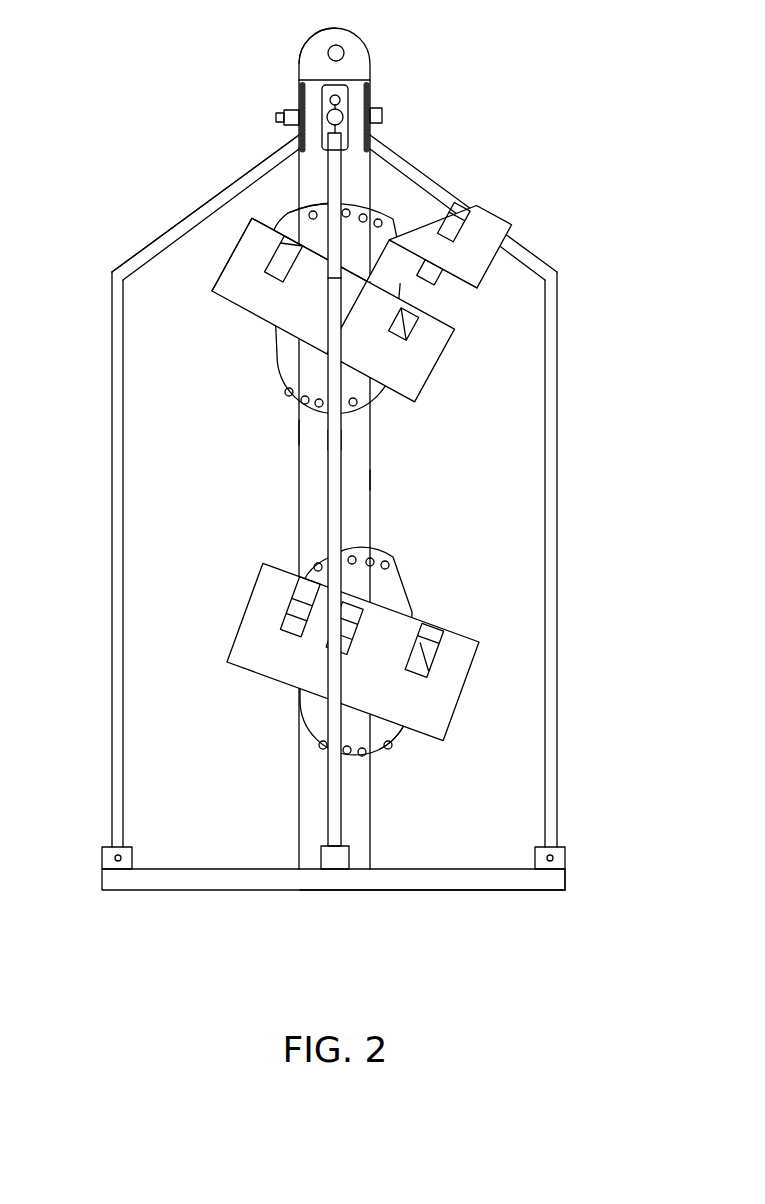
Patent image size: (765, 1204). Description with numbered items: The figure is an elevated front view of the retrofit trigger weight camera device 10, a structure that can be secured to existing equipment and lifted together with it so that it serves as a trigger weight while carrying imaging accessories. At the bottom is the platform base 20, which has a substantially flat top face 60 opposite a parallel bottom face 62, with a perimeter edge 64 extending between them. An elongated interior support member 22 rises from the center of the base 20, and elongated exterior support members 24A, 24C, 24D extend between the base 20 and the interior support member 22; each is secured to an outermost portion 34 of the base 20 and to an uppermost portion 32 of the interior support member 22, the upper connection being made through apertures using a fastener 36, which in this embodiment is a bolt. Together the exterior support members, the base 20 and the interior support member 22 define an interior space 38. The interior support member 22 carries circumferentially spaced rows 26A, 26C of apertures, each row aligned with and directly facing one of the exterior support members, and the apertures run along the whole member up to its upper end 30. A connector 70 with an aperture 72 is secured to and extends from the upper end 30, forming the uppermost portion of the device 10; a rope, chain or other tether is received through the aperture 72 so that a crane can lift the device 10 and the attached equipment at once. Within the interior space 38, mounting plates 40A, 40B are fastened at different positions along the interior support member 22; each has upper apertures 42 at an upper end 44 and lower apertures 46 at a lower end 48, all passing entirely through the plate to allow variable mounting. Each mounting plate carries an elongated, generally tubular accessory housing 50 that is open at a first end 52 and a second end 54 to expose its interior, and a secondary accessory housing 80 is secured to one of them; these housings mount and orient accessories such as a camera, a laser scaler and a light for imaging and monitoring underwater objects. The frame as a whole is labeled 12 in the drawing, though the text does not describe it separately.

The retrofit trigger weight camera device 10 is at (138, 111).
The frame 12 is at (566, 538).
The platform base 20 is at (218, 898).
The interior support member 22 is at (371, 800).
The exterior support member 24A is at (123, 387).
The exterior support member 24C is at (557, 468).
The exterior support member 24D is at (342, 440).
The row of apertures 26A is at (299, 432).
The row of apertures 26C is at (370, 480).
The upper end 30 is at (371, 80).
The uppermost portion 32 is at (371, 97).
The outermost portion 34 is at (140, 866).
The fastener 36 is at (276, 117).
The interior space 38 is at (155, 600).
The mounting plate 40A is at (270, 348).
The mounting plate 40B is at (395, 578).
The upper apertures 42 is at (367, 217).
The upper end 44 is at (298, 213).
The lower apertures 46 is at (300, 402).
The lower end 48 is at (402, 748).
The accessory housing 50 is at (441, 379).
The first end 52 is at (214, 262).
The second end 54 is at (450, 344).
The top face 60 is at (470, 869).
The bottom face 62 is at (465, 891).
The perimeter edge 64 is at (566, 881).
The connector 70 is at (298, 42).
The aperture 72 is at (344, 52).
The secondary accessory housing 80 is at (506, 222).